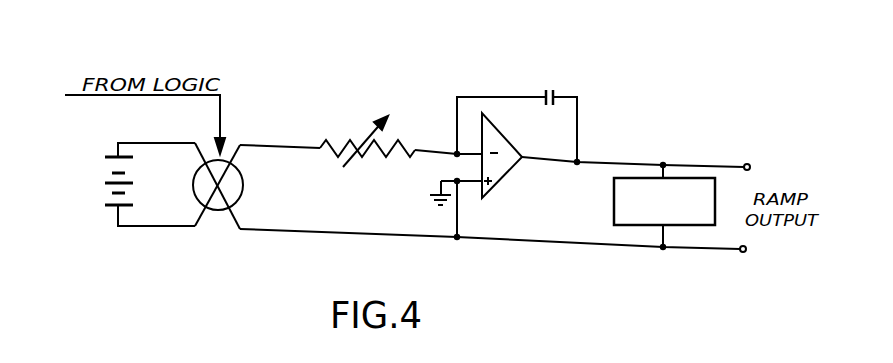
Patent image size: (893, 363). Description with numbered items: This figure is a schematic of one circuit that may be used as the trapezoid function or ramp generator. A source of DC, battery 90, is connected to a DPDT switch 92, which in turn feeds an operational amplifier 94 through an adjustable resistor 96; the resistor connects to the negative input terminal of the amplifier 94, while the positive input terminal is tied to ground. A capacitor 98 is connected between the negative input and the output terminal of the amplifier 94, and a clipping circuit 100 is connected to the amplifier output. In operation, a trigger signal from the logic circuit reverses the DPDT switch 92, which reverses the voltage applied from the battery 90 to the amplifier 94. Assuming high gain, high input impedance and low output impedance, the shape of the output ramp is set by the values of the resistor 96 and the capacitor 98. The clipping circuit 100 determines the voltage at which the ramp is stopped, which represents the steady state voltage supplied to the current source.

The battery 90 is at (103, 175).
The DPDT switch 92 is at (244, 186).
The operational amplifier 94 is at (502, 178).
The adjustable resistor 96 is at (387, 142).
The capacitor 98 is at (548, 88).
The clipping circuit 100 is at (614, 215).